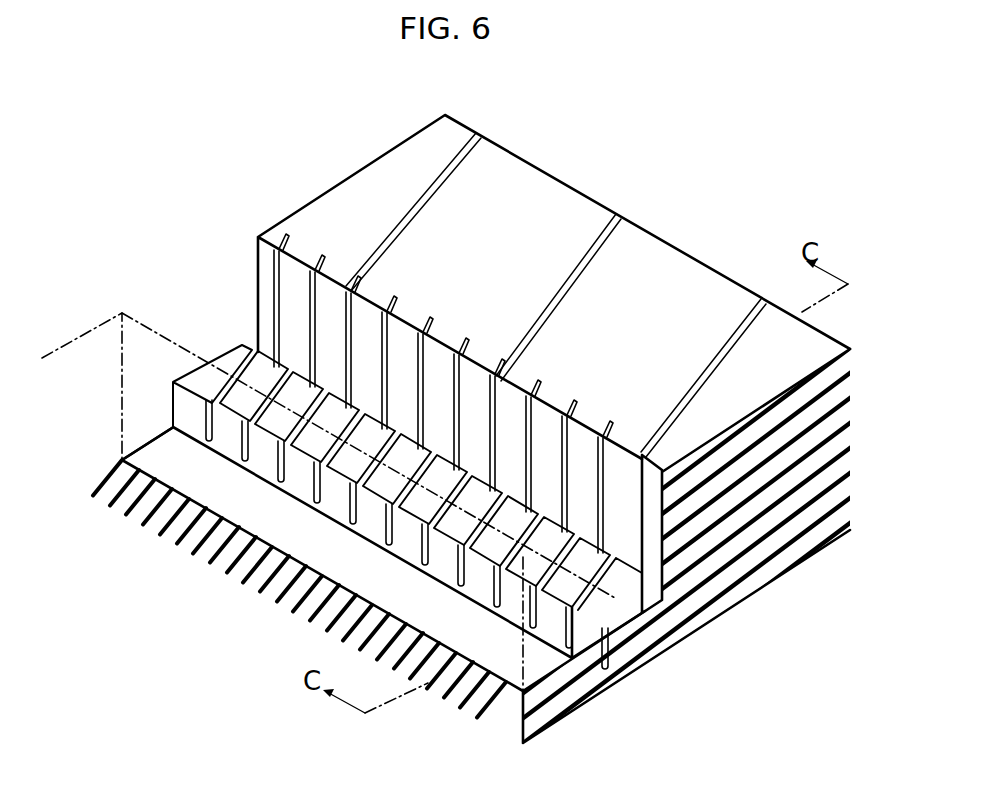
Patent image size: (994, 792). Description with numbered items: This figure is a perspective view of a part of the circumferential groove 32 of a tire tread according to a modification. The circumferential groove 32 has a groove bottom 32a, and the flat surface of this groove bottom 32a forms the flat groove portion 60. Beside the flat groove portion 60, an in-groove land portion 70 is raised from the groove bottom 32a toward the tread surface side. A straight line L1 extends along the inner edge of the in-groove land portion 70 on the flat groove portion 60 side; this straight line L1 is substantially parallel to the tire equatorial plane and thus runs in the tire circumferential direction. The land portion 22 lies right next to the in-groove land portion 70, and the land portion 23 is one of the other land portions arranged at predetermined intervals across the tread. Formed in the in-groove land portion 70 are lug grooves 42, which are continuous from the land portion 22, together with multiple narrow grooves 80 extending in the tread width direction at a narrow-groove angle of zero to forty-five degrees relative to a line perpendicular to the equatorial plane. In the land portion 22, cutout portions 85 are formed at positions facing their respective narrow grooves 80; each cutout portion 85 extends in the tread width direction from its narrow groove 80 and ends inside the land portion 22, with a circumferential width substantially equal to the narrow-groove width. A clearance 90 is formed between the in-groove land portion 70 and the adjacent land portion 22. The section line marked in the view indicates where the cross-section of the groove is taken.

The land portion 22 is at (555, 158).
The land portion 23 is at (82, 326).
The circumferential groove 32 is at (158, 252).
The groove bottom 32a is at (180, 471).
The lug groove 42 is at (480, 130).
The flat groove portion 60 is at (298, 539).
The in-groove land portion 70 is at (236, 342).
The narrow groove 80 is at (390, 525).
The cutout portion 85 is at (283, 234).
The clearance 90 is at (660, 612).
The straight line L1 is at (152, 370).